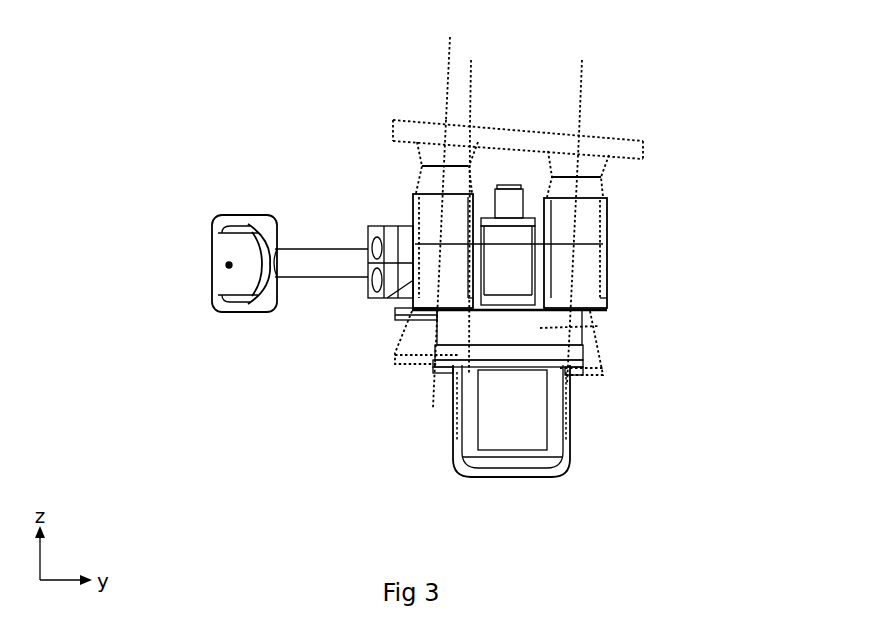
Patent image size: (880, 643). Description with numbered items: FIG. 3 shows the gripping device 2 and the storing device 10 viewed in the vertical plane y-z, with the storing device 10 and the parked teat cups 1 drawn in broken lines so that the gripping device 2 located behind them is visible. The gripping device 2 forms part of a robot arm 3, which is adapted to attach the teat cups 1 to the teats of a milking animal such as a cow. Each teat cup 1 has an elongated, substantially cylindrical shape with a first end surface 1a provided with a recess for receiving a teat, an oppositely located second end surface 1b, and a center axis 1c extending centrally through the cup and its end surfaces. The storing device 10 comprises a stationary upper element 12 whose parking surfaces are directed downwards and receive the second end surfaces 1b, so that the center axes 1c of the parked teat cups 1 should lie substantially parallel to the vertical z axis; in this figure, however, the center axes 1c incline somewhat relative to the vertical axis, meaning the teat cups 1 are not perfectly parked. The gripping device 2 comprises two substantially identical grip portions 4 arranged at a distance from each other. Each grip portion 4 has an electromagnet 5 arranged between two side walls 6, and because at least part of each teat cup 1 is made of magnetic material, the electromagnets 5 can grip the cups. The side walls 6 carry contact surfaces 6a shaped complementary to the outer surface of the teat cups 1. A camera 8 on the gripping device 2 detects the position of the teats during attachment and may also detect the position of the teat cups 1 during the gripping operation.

The teat cup 1 is at (430, 183).
The first end surface 1a is at (420, 363).
The second end surface 1b is at (458, 145).
The center axis 1c is at (443, 160).
The gripping device 2 is at (632, 357).
The robot arm 3 is at (312, 255).
The grip portion 4 is at (377, 299).
The electromagnet 5 is at (435, 233).
The side wall 6 is at (412, 210).
The contact surface 6a is at (472, 262).
The camera 8 is at (520, 410).
The storing device 10 is at (598, 110).
The upper element 12 is at (632, 148).